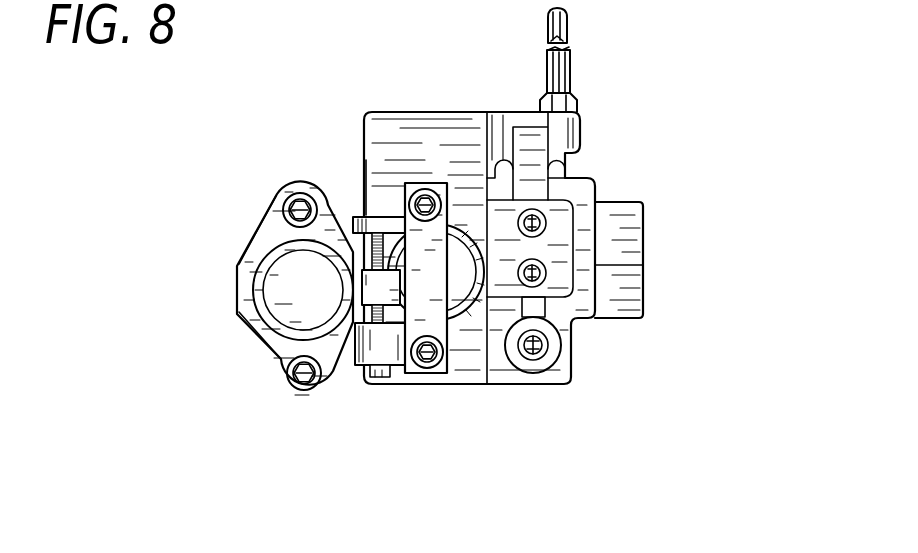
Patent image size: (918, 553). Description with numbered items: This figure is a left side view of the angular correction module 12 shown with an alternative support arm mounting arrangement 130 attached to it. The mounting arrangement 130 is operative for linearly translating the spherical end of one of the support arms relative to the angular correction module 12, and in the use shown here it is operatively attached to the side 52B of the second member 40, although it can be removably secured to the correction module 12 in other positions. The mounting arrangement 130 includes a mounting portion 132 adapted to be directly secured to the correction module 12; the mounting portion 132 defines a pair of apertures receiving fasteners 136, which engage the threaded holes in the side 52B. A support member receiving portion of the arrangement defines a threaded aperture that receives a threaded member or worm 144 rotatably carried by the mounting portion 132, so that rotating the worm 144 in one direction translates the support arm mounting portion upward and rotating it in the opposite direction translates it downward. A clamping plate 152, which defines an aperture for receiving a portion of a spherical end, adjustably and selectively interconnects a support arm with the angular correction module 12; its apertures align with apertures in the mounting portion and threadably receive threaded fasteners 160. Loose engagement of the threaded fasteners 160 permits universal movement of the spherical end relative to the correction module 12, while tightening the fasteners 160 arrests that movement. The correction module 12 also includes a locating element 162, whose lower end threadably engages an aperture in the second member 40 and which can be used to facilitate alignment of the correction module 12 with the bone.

The angular correction module 12 is at (673, 113).
The second member 40 is at (418, 113).
The side of the second member 52B is at (383, 153).
The support arm mounting arrangement 130 is at (261, 354).
The mounting portion 132 is at (440, 317).
The fasteners 136 is at (427, 190).
The worm 144 is at (379, 380).
The clamping plate 152 is at (250, 254).
The threaded fasteners 160 is at (283, 196).
The locating element 162 is at (571, 69).